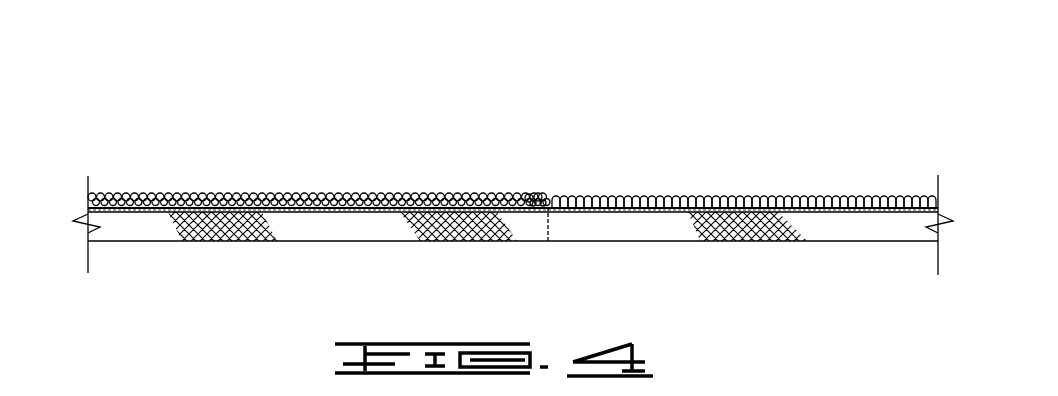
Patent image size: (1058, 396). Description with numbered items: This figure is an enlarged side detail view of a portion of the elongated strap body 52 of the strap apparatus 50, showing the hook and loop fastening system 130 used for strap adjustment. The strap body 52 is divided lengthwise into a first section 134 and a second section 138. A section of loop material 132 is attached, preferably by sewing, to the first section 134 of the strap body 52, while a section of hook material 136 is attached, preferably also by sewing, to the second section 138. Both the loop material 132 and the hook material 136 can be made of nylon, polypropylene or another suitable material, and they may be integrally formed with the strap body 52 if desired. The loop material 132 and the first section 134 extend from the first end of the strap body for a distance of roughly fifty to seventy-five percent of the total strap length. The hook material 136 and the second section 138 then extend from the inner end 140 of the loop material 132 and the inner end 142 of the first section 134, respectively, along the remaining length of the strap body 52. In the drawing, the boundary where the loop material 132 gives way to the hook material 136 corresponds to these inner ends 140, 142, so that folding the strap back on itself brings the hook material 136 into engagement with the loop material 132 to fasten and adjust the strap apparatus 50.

The strap apparatus 50 is at (698, 86).
The strap body 52 is at (140, 228).
The hook and loop fastening system 130 is at (195, 194).
The section of loop material 132 is at (322, 196).
The first section of the strap body 134 is at (305, 228).
The section of hook material 136 is at (848, 199).
The second section of the strap body 138 is at (668, 232).
The inner end of the section of loop material 140 is at (530, 198).
The inner end of the first section of the strap body 142 is at (548, 226).